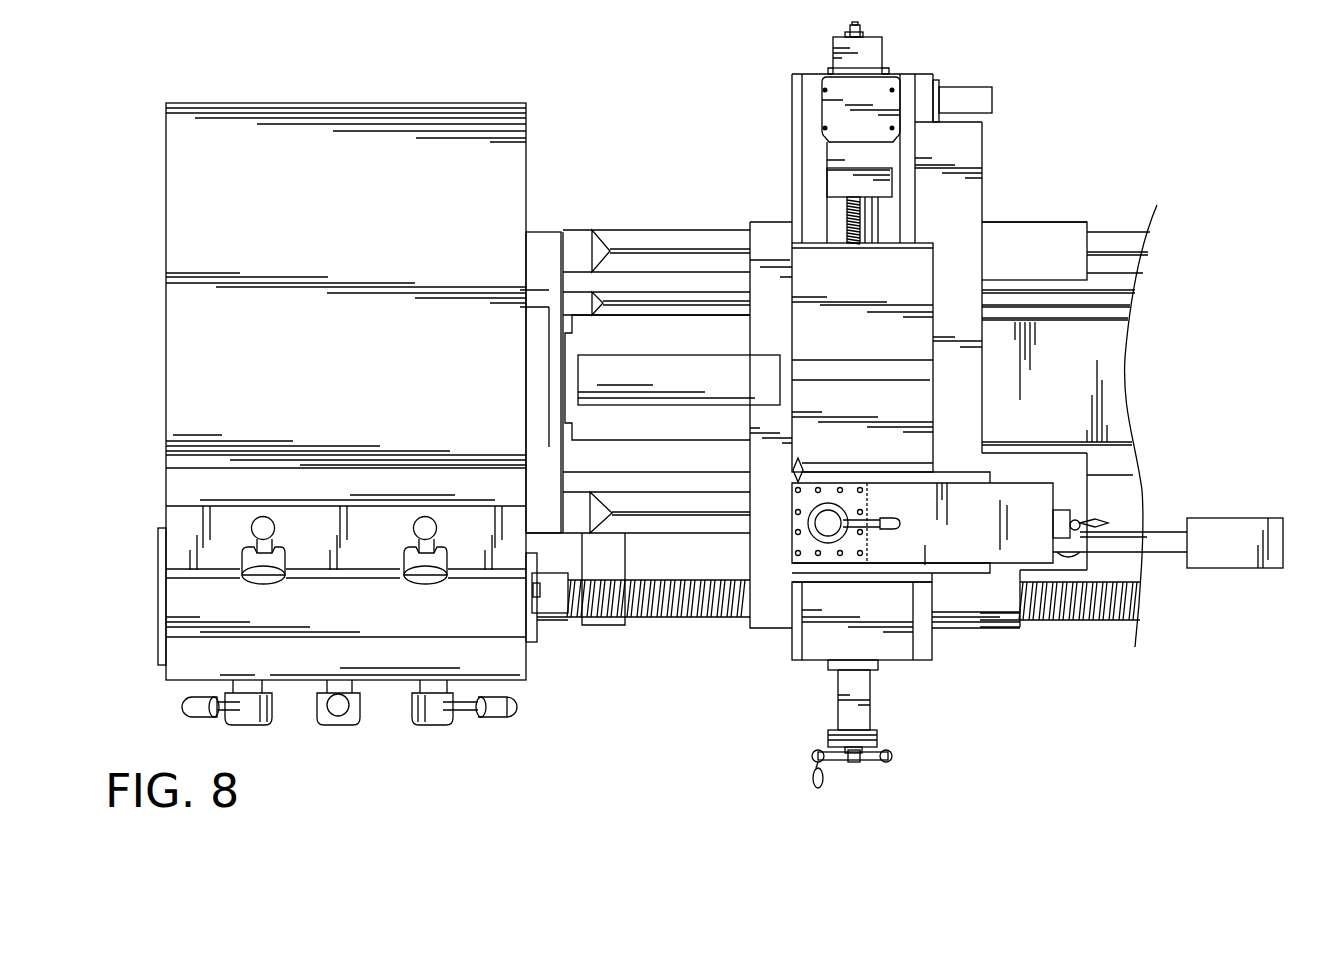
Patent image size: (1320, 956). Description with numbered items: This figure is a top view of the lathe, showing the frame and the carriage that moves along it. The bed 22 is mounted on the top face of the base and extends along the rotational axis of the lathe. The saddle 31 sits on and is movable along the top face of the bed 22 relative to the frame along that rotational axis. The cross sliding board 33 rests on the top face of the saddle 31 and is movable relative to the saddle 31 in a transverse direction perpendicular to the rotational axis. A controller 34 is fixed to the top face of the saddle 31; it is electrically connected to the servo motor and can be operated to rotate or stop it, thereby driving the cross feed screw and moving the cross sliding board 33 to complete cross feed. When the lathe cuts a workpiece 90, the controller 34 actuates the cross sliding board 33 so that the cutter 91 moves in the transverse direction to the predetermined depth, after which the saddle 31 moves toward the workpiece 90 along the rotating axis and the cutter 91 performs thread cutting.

The bed 22 is at (665, 523).
The saddle 31 is at (1038, 243).
The cross sliding board 33 is at (823, 283).
The controller 34 is at (1232, 530).
The workpiece 90 is at (655, 372).
The cutter 91 is at (795, 475).